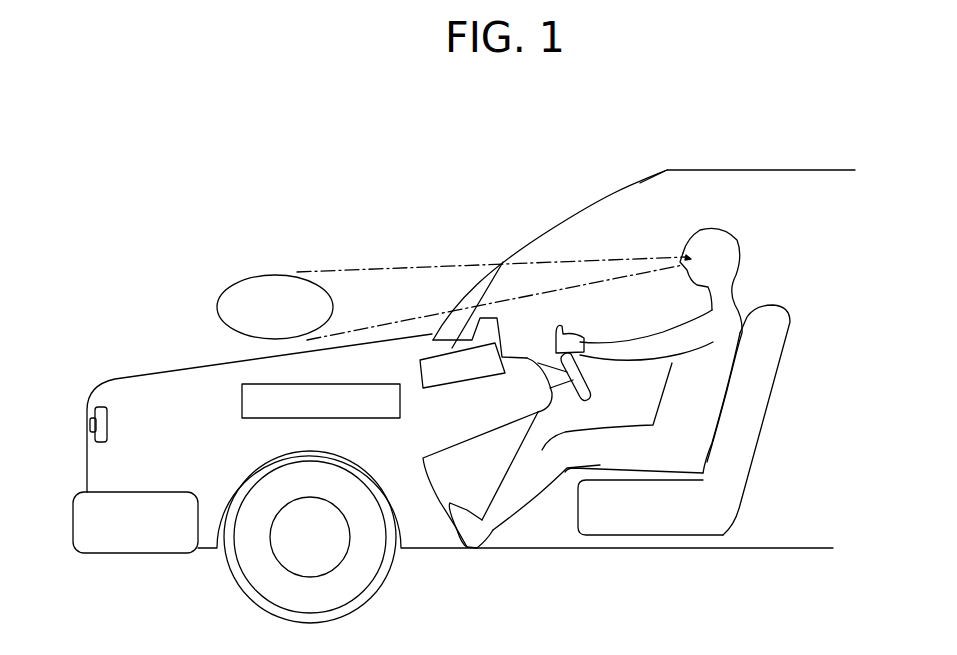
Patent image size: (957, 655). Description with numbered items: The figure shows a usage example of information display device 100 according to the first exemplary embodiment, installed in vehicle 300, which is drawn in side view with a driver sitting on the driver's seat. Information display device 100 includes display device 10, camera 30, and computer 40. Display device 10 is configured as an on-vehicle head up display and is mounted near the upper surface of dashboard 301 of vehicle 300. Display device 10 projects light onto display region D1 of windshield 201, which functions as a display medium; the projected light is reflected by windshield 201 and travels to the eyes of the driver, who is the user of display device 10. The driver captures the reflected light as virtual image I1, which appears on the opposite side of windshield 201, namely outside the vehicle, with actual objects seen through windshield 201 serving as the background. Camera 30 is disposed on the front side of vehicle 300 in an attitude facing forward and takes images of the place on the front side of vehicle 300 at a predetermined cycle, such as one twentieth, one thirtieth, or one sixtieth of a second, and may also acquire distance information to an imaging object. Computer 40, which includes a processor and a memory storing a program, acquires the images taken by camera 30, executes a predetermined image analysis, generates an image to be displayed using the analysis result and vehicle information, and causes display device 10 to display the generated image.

The information display device 100 is at (180, 243).
The virtual image I1 is at (252, 277).
The display region D1 is at (477, 287).
The computer 40 is at (247, 382).
The camera 30 is at (98, 423).
The display device 10 is at (443, 375).
The dashboard 301 is at (522, 402).
The windshield 201 is at (620, 190).
The vehicle 300 is at (687, 170).